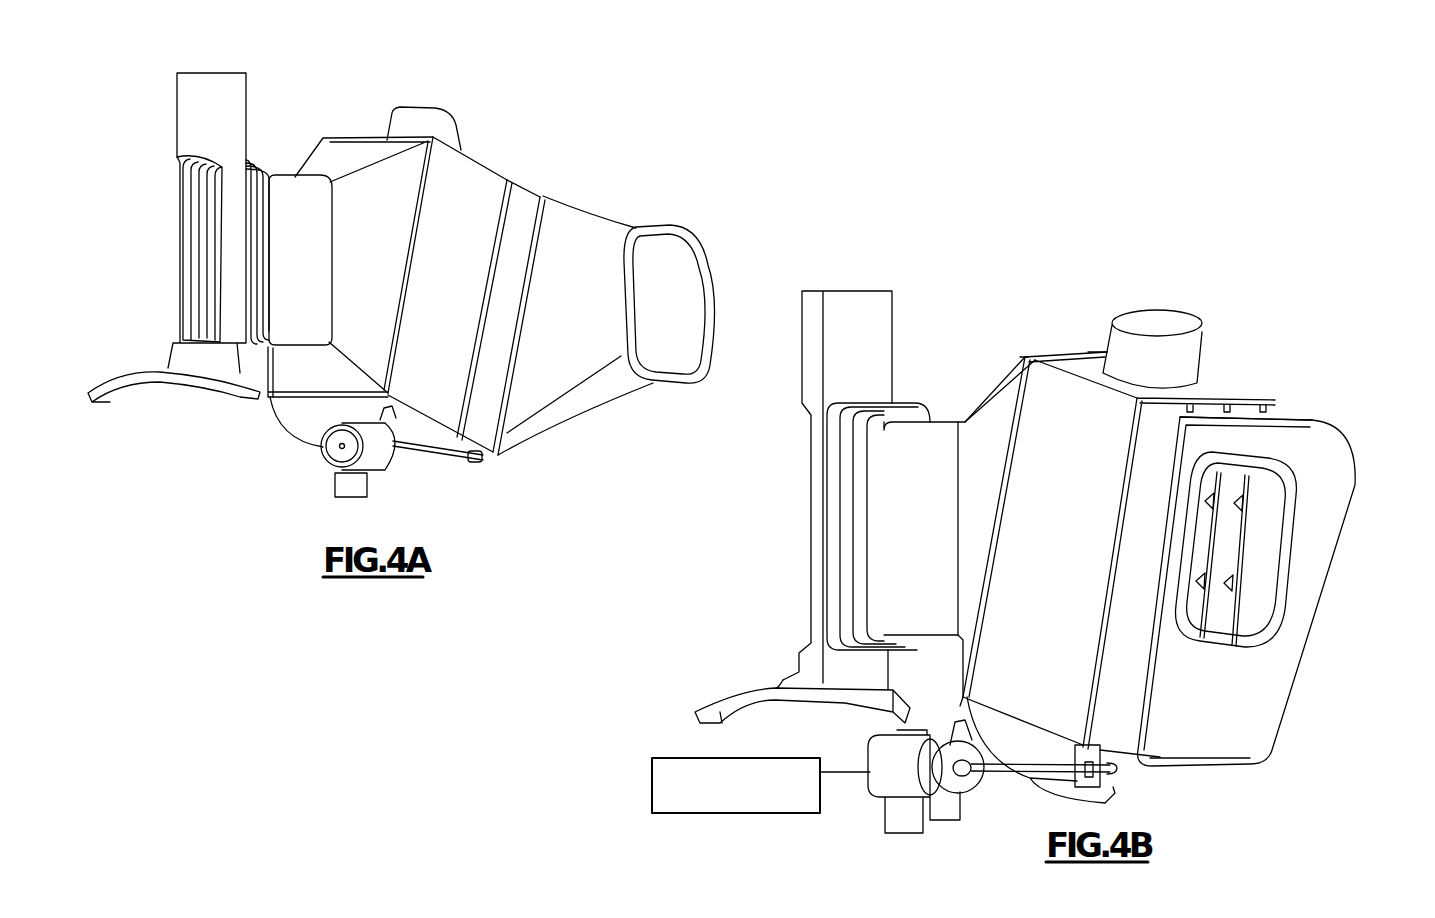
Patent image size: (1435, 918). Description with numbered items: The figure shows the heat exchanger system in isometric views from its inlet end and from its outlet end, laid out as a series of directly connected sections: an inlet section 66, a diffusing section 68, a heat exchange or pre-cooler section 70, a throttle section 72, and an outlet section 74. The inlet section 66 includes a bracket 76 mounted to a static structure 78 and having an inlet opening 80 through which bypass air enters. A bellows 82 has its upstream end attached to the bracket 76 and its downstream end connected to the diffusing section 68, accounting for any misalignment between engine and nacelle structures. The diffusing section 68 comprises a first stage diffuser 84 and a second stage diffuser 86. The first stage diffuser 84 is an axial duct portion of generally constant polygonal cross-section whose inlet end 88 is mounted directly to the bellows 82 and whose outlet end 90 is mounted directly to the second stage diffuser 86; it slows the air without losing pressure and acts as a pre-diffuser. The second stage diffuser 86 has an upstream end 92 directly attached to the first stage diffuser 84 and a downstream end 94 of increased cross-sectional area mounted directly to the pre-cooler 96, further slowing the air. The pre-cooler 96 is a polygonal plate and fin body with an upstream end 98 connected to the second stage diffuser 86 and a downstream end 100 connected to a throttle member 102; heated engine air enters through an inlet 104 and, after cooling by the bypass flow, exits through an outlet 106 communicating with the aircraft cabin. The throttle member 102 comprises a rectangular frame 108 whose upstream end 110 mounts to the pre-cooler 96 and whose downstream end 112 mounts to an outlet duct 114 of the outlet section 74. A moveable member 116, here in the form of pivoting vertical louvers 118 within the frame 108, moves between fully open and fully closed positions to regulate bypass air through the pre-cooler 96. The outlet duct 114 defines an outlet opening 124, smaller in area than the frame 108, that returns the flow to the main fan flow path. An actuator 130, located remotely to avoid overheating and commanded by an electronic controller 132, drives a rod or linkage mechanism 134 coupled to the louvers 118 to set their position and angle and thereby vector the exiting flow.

In FIG. 4A, the inlet section 66 is at (172, 64).
In FIG. 4B, the inlet section 66 is at (935, 290).
In FIG. 4A, the diffusing section 68 is at (273, 97).
In FIG. 4A, the heat exchange or pre-cooler section 70 is at (367, 92).
In FIG. 4A, the throttle section 72 is at (513, 127).
In FIG. 4A, the outlet section 74 is at (702, 149).
In FIG. 4A, the bracket 76 is at (185, 118).
In FIG. 4B, the bracket 76 is at (836, 297).
In FIG. 4A, the static structure 78 is at (90, 397).
In FIG. 4B, the static structure 78 is at (702, 713).
In FIG. 4A, the inlet opening 80 is at (189, 307).
In FIG. 4A, the bellows 82 is at (254, 161).
In FIG. 4B, the bellows 82 is at (845, 577).
In FIG. 4A, the first stage diffuser 84 is at (272, 350).
In FIG. 4B, the first stage diffuser 84 is at (936, 432).
In FIG. 4A, the second stage diffuser 86 is at (320, 156).
In FIG. 4B, the second stage diffuser 86 is at (997, 403).
In FIG. 4B, the inlet end 88 is at (897, 430).
In FIG. 4B, the outlet end 90 is at (960, 427).
In FIG. 4B, the upstream end 92 is at (953, 653).
In FIG. 4B, the downstream end 94 is at (1020, 357).
In FIG. 4A, the pre-cooler 96 is at (460, 177).
In FIG. 4B, the pre-cooler 96 is at (1207, 388).
In FIG. 4B, the upstream end 98 is at (1092, 352).
In FIG. 4B, the downstream end 100 is at (1247, 397).
In FIG. 4A, the throttle member 102 is at (518, 200).
In FIG. 4B, the throttle member 102 is at (1285, 412).
In FIG. 4A, the inlet 104 is at (296, 422).
In FIG. 4B, the inlet 104 is at (1048, 793).
In FIG. 4B, the outlet 106 is at (1165, 327).
In FIG. 4A, the frame 108 is at (388, 413).
In FIG. 4B, the frame 108 is at (1110, 727).
In FIG. 4B, the upstream end 110 is at (1288, 402).
In FIG. 4A, the downstream end 112 is at (493, 453).
In FIG. 4B, the downstream end 112 is at (1313, 417).
In FIG. 4A, the outlet duct 114 is at (580, 412).
In FIG. 4B, the outlet duct 114 is at (1342, 472).
In FIG. 4B, the moveable member 116 is at (1250, 607).
In FIG. 4B, the louvers 118 is at (1233, 562).
In FIG. 4A, the outlet opening 124 is at (698, 381).
In FIG. 4B, the outlet opening 124 is at (1263, 630).
In FIG. 4A, the actuator 130 is at (332, 455).
In FIG. 4B, the actuator 130 is at (893, 752).
In FIG. 4B, the electronic controller 132 is at (652, 786).
In FIG. 4A, the rod or linkage mechanism 134 is at (427, 457).
In FIG. 4B, the rod or linkage mechanism 134 is at (995, 775).